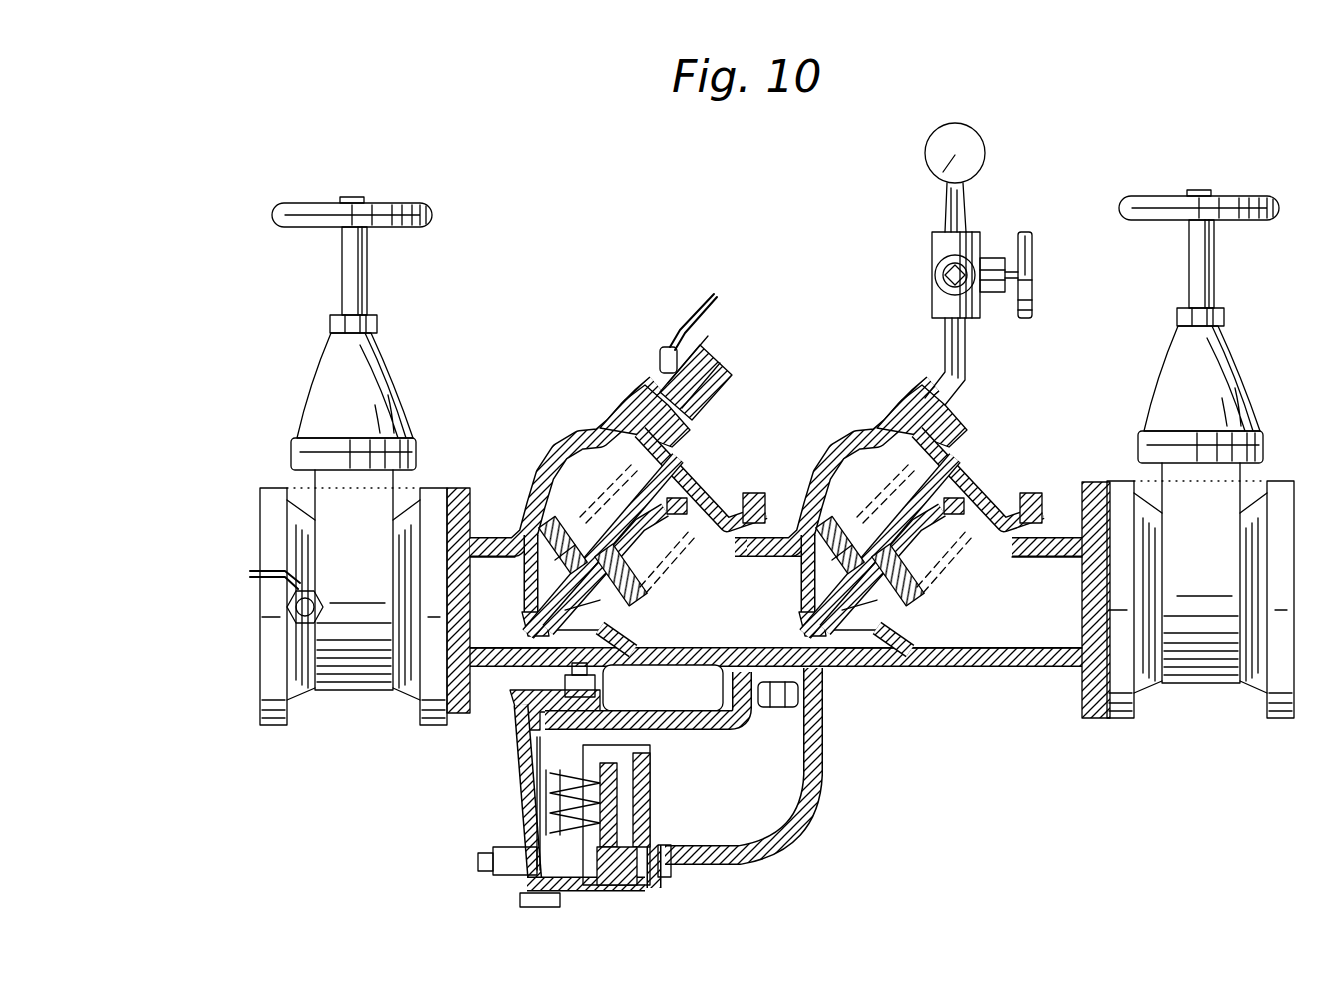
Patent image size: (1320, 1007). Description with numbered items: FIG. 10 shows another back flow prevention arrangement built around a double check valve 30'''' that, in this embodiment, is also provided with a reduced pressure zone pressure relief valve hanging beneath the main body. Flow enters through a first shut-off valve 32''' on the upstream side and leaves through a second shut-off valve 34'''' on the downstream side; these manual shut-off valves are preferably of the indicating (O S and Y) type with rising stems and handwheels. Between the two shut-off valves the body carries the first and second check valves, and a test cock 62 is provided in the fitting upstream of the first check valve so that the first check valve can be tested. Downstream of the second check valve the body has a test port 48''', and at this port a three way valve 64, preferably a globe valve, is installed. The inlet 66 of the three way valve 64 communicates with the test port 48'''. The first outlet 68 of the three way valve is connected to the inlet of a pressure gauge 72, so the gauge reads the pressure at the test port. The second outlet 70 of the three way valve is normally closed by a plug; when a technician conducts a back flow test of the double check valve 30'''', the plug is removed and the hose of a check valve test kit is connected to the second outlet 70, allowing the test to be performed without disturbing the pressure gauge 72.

The double check valve 30'''' is at (778, 600).
The first shut-off valve 32''' is at (353, 503).
The second shut-off valve 34'''' is at (1200, 485).
The test port 48''' is at (910, 484).
The test cock 62 is at (285, 618).
The three way valve 64 is at (983, 240).
The inlet 66 is at (940, 320).
The first outlet 68 is at (980, 233).
The second outlet 70 is at (942, 267).
The pressure gauge 72 is at (978, 130).